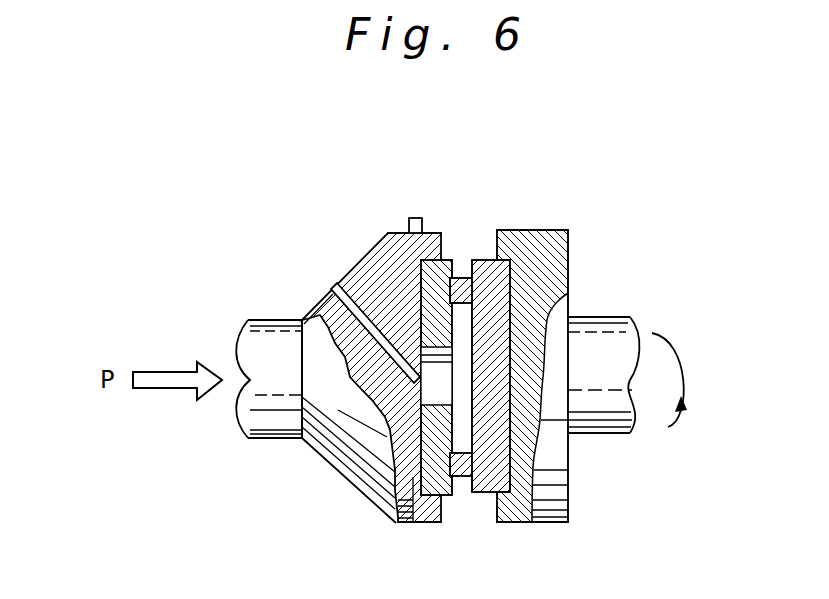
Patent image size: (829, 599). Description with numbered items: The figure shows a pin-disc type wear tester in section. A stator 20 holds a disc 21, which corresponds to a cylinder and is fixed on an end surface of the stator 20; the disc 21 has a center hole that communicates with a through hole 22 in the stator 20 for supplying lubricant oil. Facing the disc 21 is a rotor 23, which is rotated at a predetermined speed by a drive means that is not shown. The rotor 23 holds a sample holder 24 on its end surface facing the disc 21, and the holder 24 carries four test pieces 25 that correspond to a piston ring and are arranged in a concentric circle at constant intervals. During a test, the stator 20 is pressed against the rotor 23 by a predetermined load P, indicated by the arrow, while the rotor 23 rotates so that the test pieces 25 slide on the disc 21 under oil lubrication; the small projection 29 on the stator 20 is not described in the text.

The stator 20 is at (365, 256).
The disc 21 is at (452, 260).
The through hole 22 is at (337, 286).
The rotor 23 is at (553, 230).
The sample holder 24 is at (488, 260).
The test pieces 25 is at (460, 478).
The pin 29 is at (413, 218).